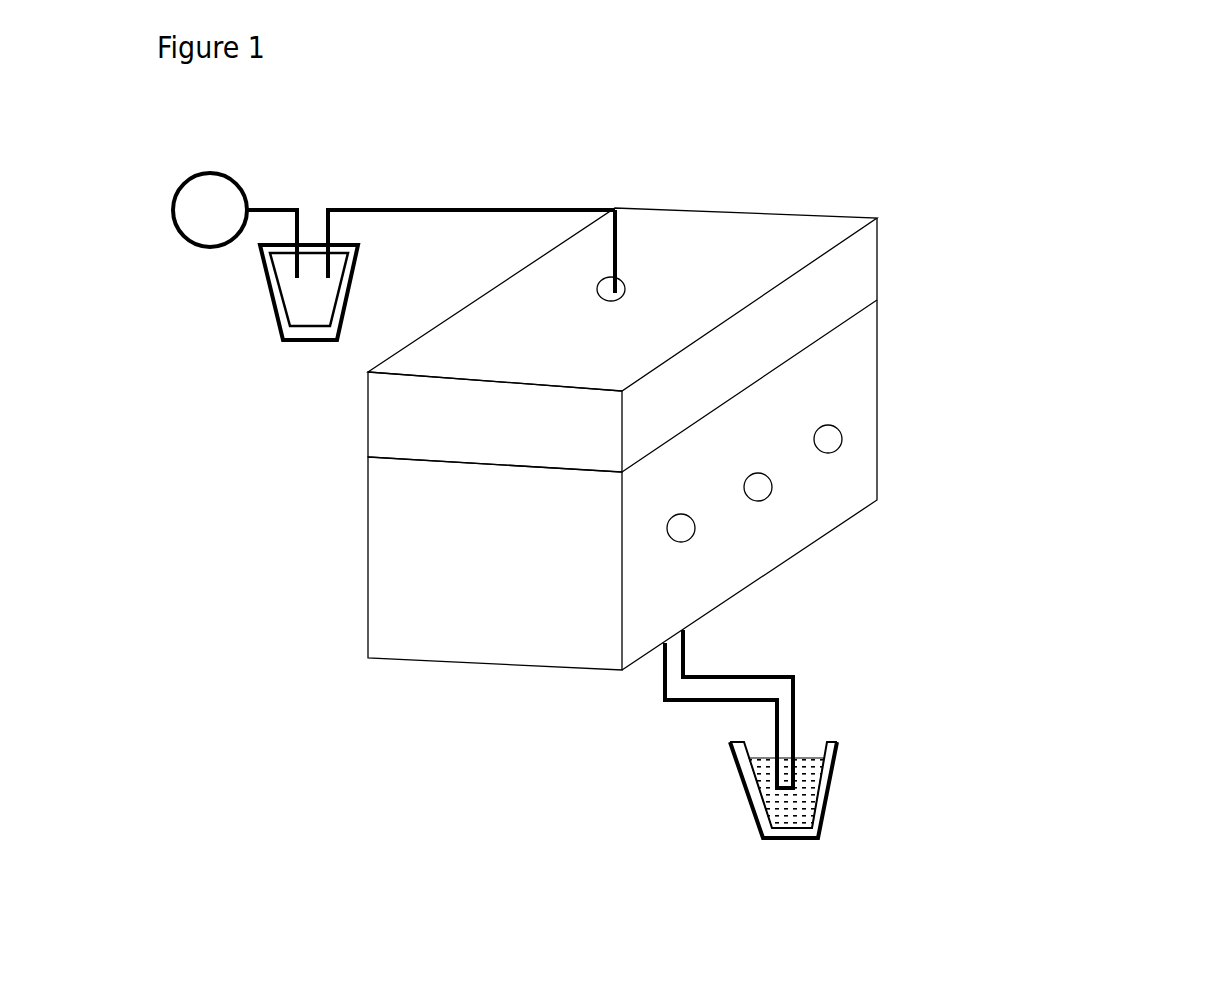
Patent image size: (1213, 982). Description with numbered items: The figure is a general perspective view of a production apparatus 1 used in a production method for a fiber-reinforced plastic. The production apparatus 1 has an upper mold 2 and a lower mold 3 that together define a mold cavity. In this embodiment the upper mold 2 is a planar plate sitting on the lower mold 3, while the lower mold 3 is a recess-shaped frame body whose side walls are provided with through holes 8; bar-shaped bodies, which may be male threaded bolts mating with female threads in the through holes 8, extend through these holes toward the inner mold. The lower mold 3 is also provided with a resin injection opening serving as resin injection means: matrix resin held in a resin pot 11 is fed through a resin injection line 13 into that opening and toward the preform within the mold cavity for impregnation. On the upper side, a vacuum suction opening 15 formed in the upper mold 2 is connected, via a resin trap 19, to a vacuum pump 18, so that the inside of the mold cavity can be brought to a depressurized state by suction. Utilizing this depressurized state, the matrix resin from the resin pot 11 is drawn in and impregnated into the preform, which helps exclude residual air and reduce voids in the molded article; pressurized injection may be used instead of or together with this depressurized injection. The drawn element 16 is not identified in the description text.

The production apparatus 1 is at (1023, 268).
The upper mold 2 is at (753, 233).
The lower mold 3 is at (860, 483).
The through holes 8 is at (825, 435).
The resin pot 11 is at (810, 790).
The resin injection line 13 is at (662, 700).
The vacuum suction opening 15 is at (617, 288).
The electrical lead 16 is at (437, 210).
The vacuum pump 18 is at (203, 245).
The resin trap 19 is at (297, 302).